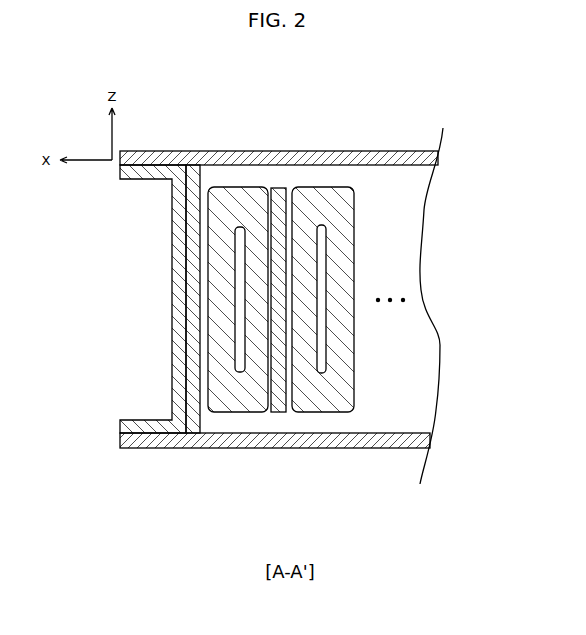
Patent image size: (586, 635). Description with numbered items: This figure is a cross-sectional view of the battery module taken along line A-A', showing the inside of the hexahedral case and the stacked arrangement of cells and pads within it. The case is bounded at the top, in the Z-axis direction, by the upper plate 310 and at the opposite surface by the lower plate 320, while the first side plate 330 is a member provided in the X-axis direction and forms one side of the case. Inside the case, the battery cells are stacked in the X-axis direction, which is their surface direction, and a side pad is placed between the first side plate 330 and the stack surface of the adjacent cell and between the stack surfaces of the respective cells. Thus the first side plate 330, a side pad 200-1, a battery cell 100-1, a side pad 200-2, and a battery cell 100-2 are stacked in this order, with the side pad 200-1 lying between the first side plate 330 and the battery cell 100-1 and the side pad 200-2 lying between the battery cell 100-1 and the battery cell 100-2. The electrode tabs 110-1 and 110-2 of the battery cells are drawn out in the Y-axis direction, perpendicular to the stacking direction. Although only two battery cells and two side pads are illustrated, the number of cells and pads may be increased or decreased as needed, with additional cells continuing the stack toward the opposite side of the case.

The upper plate 310 is at (378, 151).
The lower plate 320 is at (380, 448).
The first side plate 330 is at (172, 306).
The side pad 200-1 is at (200, 165).
The side pad 200-2 is at (280, 188).
The battery cell 100-1 is at (173, 348).
The battery cell 100-2 is at (405, 349).
The electrode tab 110-1 is at (235, 238).
The electrode tab 110-2 is at (326, 343).